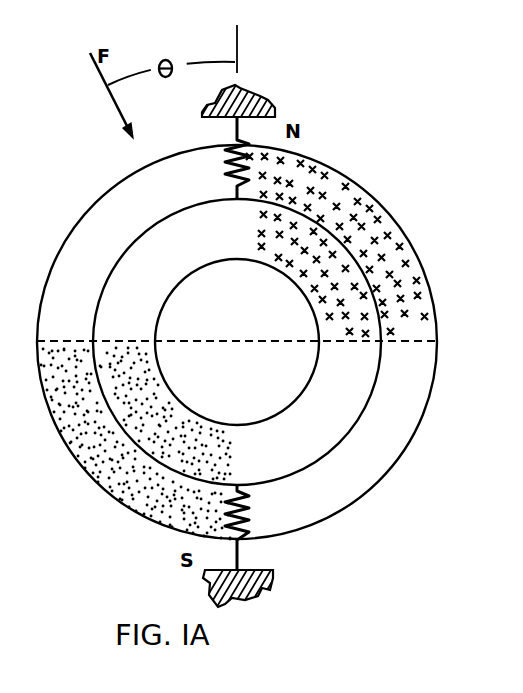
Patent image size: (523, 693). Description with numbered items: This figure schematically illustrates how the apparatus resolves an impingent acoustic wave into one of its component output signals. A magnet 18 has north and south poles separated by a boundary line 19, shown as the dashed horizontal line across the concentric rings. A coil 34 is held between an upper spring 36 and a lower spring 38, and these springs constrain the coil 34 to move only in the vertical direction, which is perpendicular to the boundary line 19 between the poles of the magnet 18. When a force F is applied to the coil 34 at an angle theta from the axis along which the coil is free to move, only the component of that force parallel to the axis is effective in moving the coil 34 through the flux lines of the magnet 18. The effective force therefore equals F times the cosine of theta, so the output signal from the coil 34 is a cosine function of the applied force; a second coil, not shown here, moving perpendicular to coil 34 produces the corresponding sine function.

The magnet 18 is at (405, 288).
The boundary line 19 is at (406, 342).
The coil 34 is at (357, 255).
The spring 36 is at (245, 148).
The spring 38 is at (247, 528).